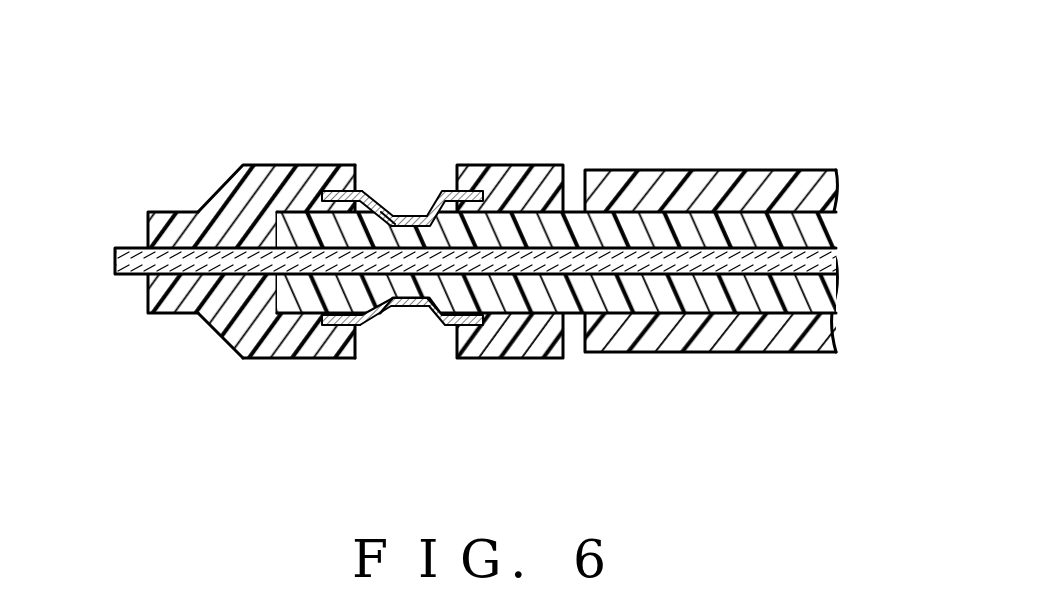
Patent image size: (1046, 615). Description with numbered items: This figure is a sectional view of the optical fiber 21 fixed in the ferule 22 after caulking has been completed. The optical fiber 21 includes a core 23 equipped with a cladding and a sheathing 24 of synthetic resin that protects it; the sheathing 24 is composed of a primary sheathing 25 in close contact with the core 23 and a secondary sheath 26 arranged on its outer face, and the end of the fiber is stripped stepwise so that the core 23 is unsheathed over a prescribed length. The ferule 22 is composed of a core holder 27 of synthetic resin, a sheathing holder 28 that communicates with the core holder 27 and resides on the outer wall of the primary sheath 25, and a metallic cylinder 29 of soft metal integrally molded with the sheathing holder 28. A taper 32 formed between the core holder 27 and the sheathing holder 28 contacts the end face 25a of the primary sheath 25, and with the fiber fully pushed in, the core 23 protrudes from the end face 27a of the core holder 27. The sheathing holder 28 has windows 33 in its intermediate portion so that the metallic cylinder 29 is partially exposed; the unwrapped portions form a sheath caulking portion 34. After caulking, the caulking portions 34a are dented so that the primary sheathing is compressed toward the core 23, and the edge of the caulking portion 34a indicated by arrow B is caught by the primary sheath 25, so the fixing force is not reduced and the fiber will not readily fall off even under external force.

The optical fiber 21 is at (557, 279).
The ferule 22 is at (315, 283).
The core 23 is at (118, 256).
The sheathing 24 is at (557, 330).
The primary sheathing 25 is at (790, 430).
The end face of the primary sheath 25a is at (265, 237).
The secondary sheath 26 is at (760, 340).
The core holder 27 is at (176, 208).
The end face of the core holder 27a is at (145, 314).
The sheathing holder 28 is at (280, 358).
The metallic cylinder 29 is at (370, 185).
The taper 32 is at (230, 340).
The windows 33 is at (362, 178).
The sheath caulking portion 34 is at (447, 200).
The caulking portion 34a is at (410, 212).
The arrow B is at (390, 213).